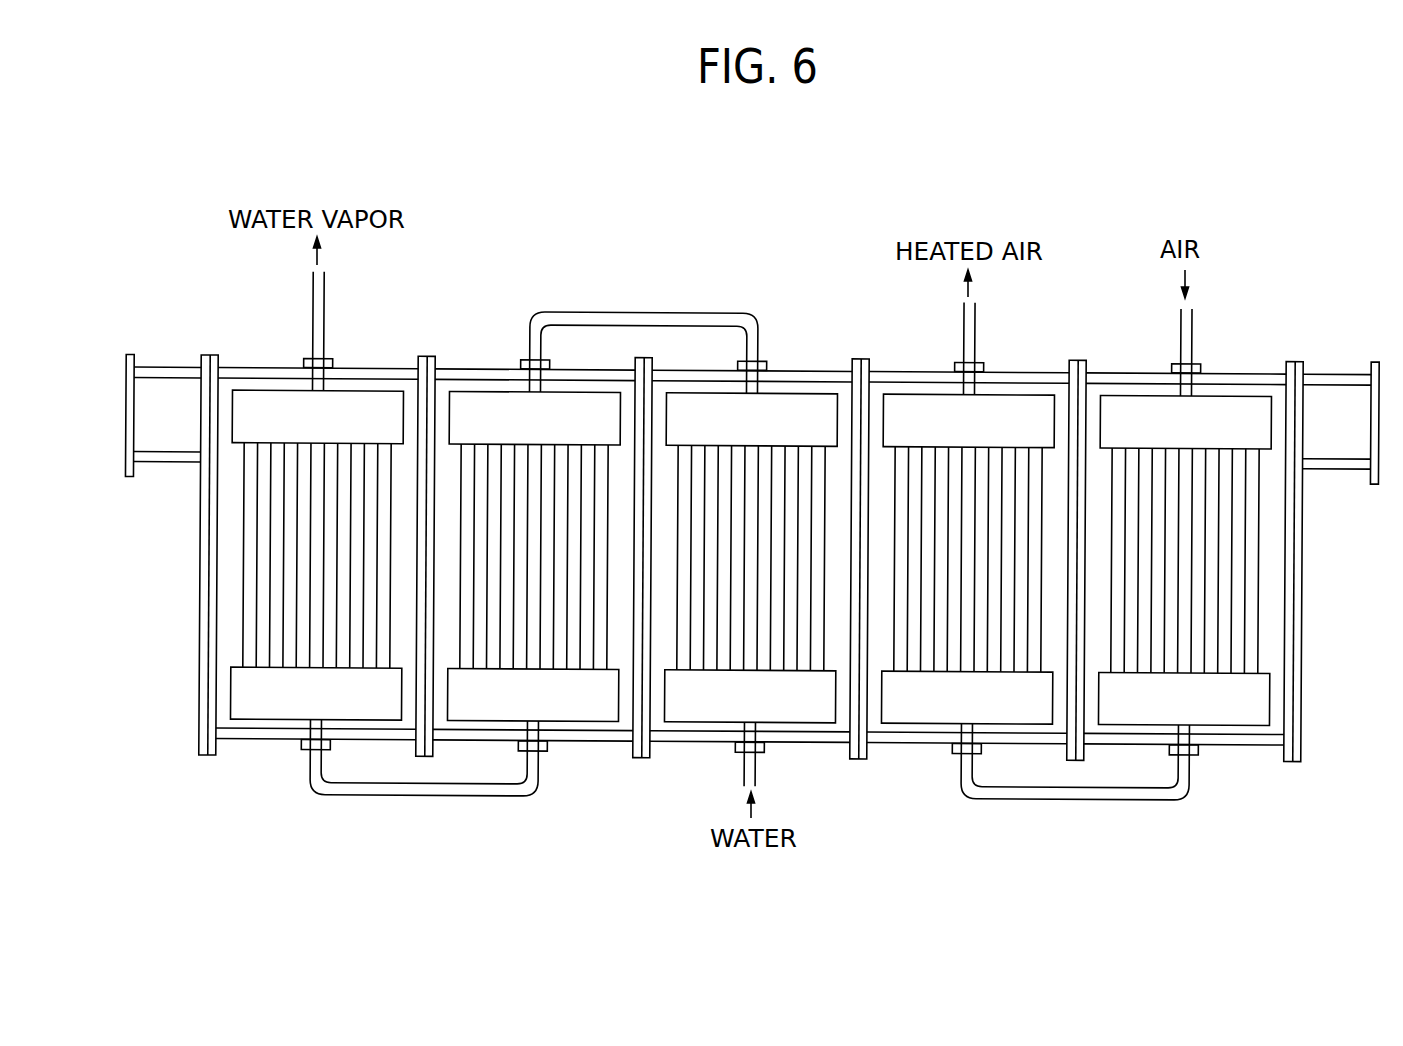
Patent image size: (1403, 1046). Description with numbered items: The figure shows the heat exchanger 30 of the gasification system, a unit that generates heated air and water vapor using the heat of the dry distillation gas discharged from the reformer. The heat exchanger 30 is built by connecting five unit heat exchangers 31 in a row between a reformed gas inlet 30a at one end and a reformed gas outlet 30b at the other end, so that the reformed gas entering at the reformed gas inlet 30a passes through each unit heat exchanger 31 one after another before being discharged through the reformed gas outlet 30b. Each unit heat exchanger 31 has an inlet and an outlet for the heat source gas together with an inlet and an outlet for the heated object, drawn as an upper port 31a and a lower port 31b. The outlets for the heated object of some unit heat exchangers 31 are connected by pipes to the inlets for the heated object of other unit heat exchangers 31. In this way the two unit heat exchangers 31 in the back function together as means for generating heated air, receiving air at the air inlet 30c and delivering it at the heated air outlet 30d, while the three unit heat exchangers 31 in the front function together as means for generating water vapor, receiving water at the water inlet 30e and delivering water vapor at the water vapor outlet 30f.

The heat exchanger 30 is at (1100, 168).
The reformed gas inlet 30a is at (165, 462).
The reformed gas outlet 30b is at (1340, 470).
The air inlet 30c is at (1198, 364).
The heated air outlet 30d is at (978, 361).
The water inlet 30e is at (763, 755).
The water vapor outlet 30f is at (330, 358).
The unit heat exchanger 31 is at (240, 743).
The inlet/outlet for heated object 31a is at (528, 358).
The inlet/outlet for heated object 31b is at (305, 757).